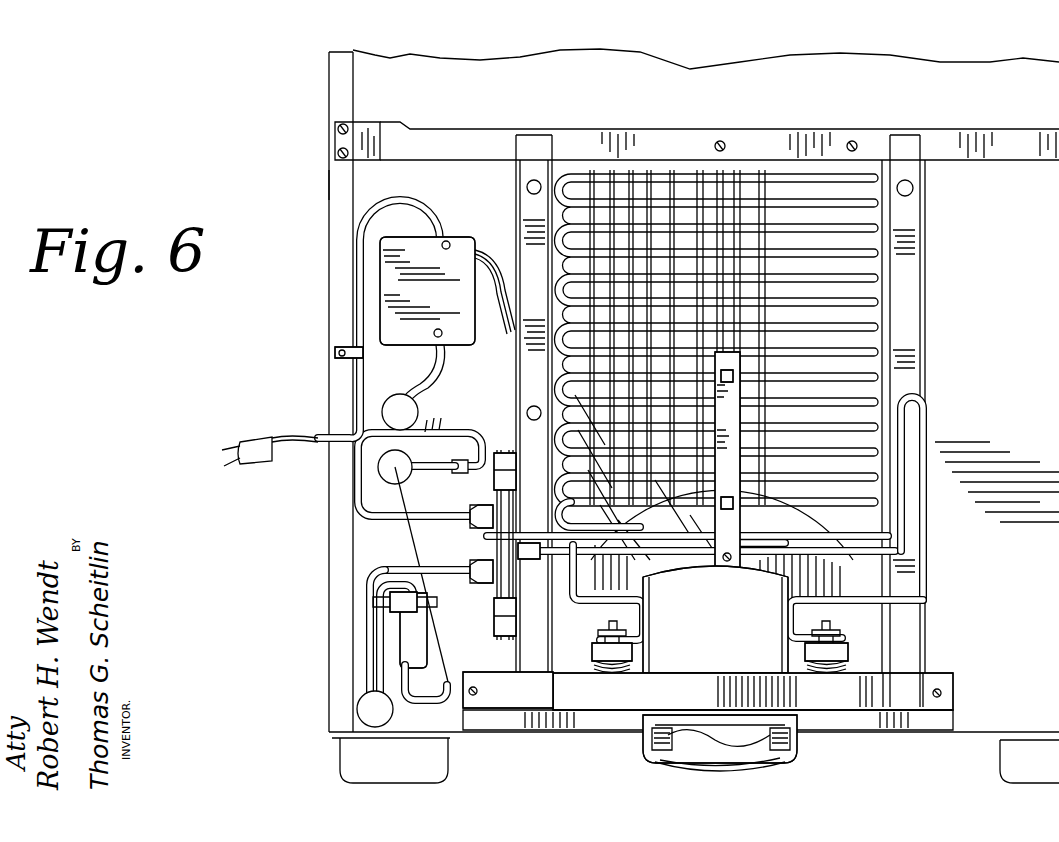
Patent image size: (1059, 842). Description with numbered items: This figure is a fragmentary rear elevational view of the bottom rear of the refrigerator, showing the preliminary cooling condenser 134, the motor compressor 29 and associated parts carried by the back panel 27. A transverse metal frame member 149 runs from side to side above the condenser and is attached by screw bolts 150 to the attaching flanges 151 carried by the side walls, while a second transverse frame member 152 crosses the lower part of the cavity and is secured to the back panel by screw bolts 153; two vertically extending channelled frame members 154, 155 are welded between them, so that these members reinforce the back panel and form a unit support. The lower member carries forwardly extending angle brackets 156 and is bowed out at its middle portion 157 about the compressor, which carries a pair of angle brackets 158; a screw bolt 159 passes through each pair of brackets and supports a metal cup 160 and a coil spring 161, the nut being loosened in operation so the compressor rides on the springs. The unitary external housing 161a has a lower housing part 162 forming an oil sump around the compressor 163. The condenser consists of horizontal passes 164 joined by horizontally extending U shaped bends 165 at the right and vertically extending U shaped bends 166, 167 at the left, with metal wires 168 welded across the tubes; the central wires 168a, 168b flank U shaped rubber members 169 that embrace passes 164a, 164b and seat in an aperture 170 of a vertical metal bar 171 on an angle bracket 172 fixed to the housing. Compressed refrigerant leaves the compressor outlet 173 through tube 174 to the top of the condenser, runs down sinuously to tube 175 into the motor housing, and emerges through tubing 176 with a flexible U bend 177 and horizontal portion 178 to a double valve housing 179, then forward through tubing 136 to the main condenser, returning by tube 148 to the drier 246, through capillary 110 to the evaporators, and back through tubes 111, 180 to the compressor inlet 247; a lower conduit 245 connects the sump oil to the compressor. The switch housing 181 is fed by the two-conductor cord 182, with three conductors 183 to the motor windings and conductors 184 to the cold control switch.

The back panel 27 is at (450, 43).
The motor compressor 29 is at (658, 762).
The capillary 110 is at (400, 482).
The tube 111 is at (433, 425).
The preliminary condenser 134 is at (660, 170).
The tubing 136 is at (378, 568).
The tube 148 is at (368, 640).
The transverse metal frame member 149 is at (836, 142).
The screw bolts 150 is at (336, 128).
The attaching flanges 151 is at (330, 185).
The second transverse frame member 152 is at (840, 701).
The screw bolts 153 is at (470, 696).
The vertically extending channelled frame member 154 is at (522, 228).
The vertically extending channelled frame member 155 is at (905, 222).
The angle brackets 156 is at (594, 690).
The middle portion 157 is at (740, 664).
The angle brackets 158 is at (645, 614).
The screw bolt 159 is at (620, 606).
The metal cup 160 is at (598, 645).
The coil spring 161 is at (626, 655).
The unitary external housing 161a is at (740, 639).
The lower housing part 162 is at (652, 750).
The compressor 163 is at (672, 765).
The horizontal passes 164 is at (808, 206).
The horizontal pass 164a is at (778, 378).
The horizontal pass 164b is at (778, 505).
The U shaped bends 165 is at (915, 208).
The U shaped bends 166 is at (558, 181).
The U shaped bends 167 is at (563, 200).
The metal wires 168 is at (766, 240).
The central wire 168a is at (722, 286).
The central wire 168b is at (741, 262).
The U shaped rubber members 169 is at (736, 508).
The aperture 170 is at (735, 379).
The vertical metal bar 171 is at (746, 409).
The angle bracket 172 is at (735, 574).
The compressor outlet 173 is at (676, 735).
The tube 174 is at (640, 720).
The tube 175 is at (578, 574).
The tubing 176 is at (832, 598).
The flexible U bend 177 is at (914, 392).
The horizontal portion 178 is at (826, 546).
The double valve housing 179 is at (505, 556).
The tube 180 is at (466, 516).
The housing of combined thermal overload and motor starting switch 181 is at (432, 285).
The two-conductor cord 182 is at (357, 300).
The three conductors 183 is at (503, 300).
The conductors 184 is at (440, 360).
The lower conduit 245 is at (752, 768).
The drier 246 is at (416, 638).
The compressor inlet 247 is at (792, 752).